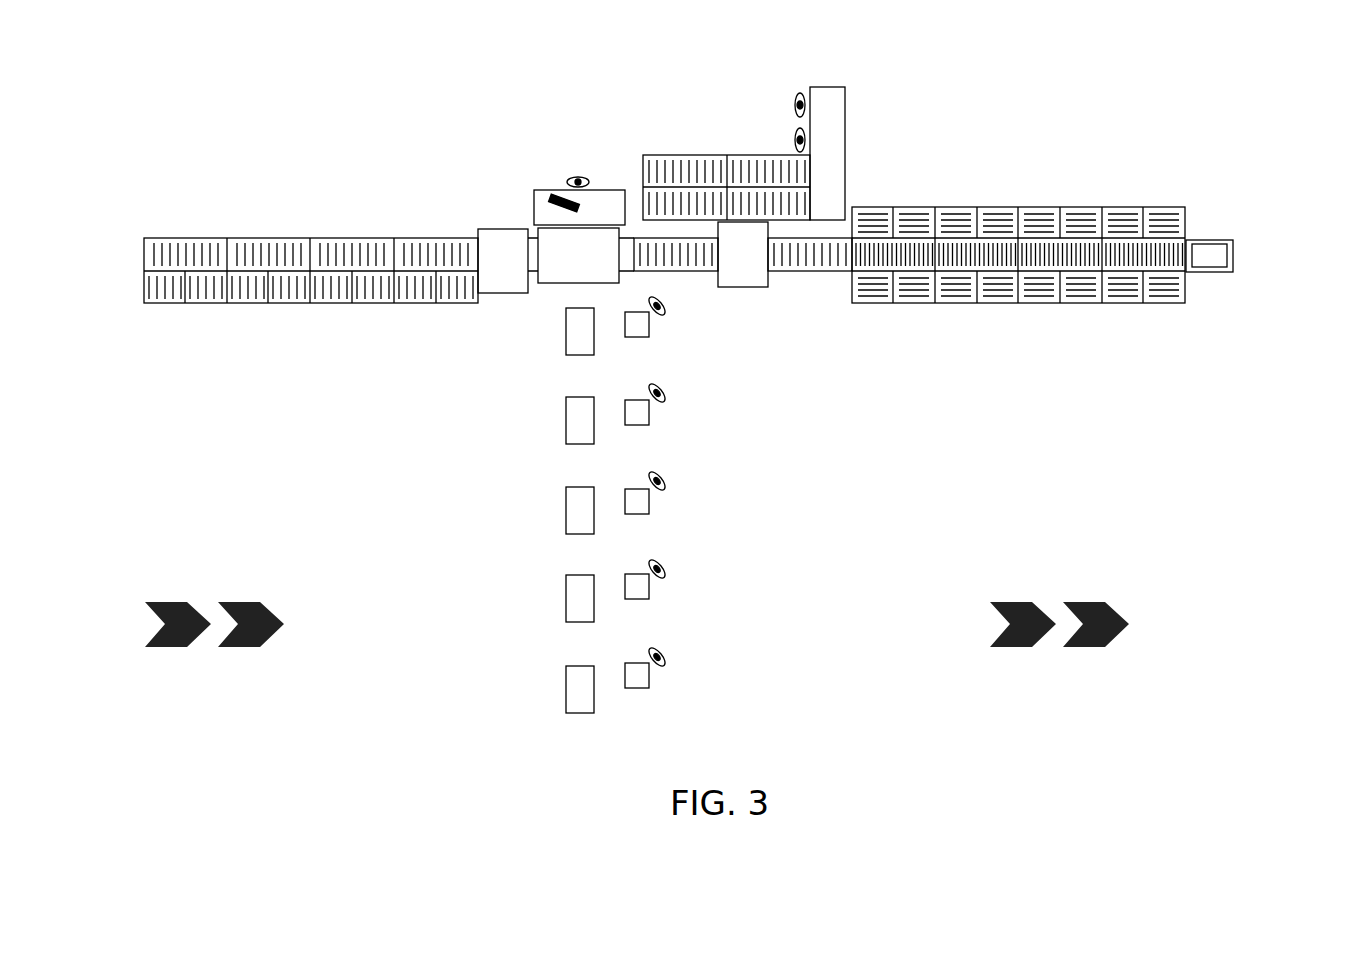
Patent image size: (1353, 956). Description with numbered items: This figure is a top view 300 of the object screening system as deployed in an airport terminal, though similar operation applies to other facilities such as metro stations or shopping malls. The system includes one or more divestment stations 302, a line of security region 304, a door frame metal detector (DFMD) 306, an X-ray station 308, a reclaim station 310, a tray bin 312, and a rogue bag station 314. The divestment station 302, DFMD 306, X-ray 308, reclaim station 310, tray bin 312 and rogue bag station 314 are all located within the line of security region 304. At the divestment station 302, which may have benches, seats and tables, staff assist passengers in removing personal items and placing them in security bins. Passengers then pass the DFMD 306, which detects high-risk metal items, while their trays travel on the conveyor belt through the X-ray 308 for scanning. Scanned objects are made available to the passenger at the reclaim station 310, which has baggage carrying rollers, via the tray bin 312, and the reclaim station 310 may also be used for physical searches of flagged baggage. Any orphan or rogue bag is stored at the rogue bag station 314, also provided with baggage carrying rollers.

The top view 300 is at (1160, 112).
The divestment station 302 is at (160, 293).
The line of security region 304 is at (459, 712).
The door frame metal detector (DFMD) 306 is at (580, 503).
The X-ray station 308 is at (531, 154).
The reclaim station 310 is at (1122, 290).
The tray bin 312 is at (1208, 258).
The rogue bag station 314 is at (1007, 136).